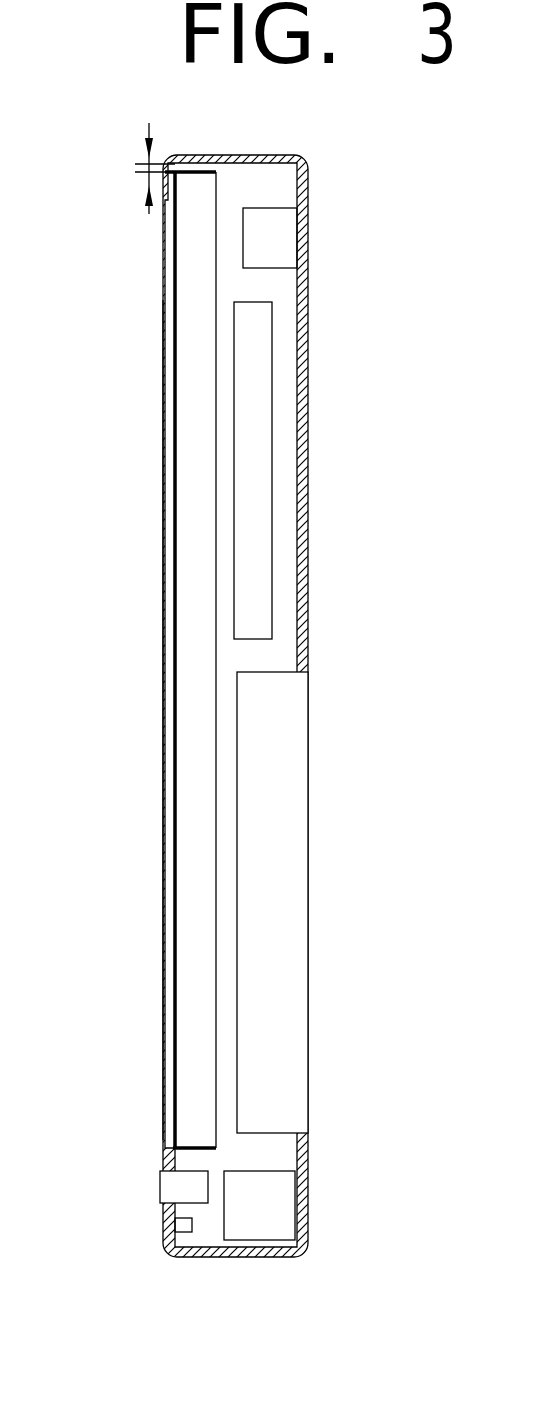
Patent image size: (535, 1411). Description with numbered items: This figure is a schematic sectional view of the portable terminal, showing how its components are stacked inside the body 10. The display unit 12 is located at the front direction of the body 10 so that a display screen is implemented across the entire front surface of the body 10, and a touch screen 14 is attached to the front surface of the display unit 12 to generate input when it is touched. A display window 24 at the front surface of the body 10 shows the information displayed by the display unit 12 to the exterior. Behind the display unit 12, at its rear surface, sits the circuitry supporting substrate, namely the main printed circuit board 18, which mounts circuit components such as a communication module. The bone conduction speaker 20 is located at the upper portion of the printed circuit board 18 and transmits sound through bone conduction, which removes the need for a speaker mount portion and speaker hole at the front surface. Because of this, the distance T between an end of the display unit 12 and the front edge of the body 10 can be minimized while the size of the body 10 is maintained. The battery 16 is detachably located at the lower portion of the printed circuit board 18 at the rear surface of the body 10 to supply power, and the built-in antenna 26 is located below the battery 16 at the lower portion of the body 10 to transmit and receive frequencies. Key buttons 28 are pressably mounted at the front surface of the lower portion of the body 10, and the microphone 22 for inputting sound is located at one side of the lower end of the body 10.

The body 10 is at (305, 336).
The display unit 12 is at (184, 313).
The touch screen 14 is at (172, 243).
The battery 16 is at (283, 775).
The main printed circuit board 18 is at (258, 462).
The bone conduction speaker 20 is at (288, 229).
The microphone 22 is at (186, 1233).
The display window 24 is at (164, 673).
The built-in antenna 26 is at (285, 1208).
The key buttons 28 is at (160, 1186).
The distance T is at (142, 168).